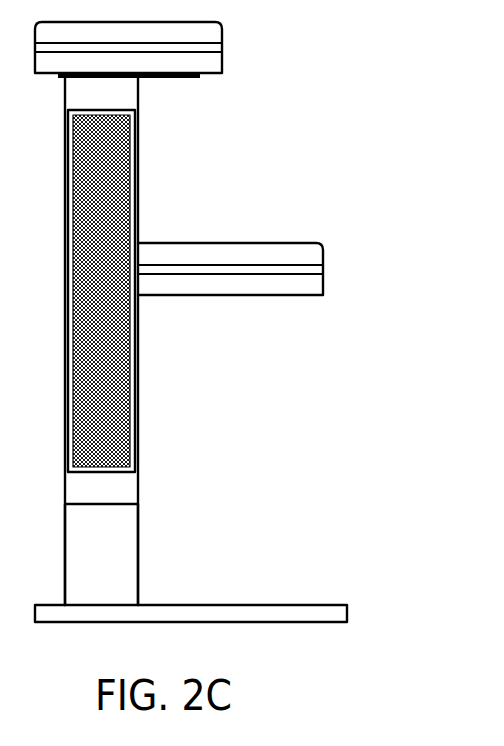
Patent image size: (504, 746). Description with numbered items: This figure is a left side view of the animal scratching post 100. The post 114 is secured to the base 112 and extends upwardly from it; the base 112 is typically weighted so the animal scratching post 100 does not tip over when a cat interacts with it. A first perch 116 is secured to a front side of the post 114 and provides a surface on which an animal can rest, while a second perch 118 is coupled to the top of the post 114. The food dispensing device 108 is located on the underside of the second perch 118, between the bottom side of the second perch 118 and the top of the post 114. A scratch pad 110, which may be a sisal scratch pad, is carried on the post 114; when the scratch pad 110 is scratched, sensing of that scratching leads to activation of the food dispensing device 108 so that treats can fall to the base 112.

The animal scratching post 100 is at (379, 88).
The food dispensing device 108 is at (173, 78).
The scratch pads 110 is at (130, 380).
The base 112 is at (347, 610).
The post 114 is at (138, 546).
The first perch 116 is at (323, 253).
The second perch 118 is at (222, 27).